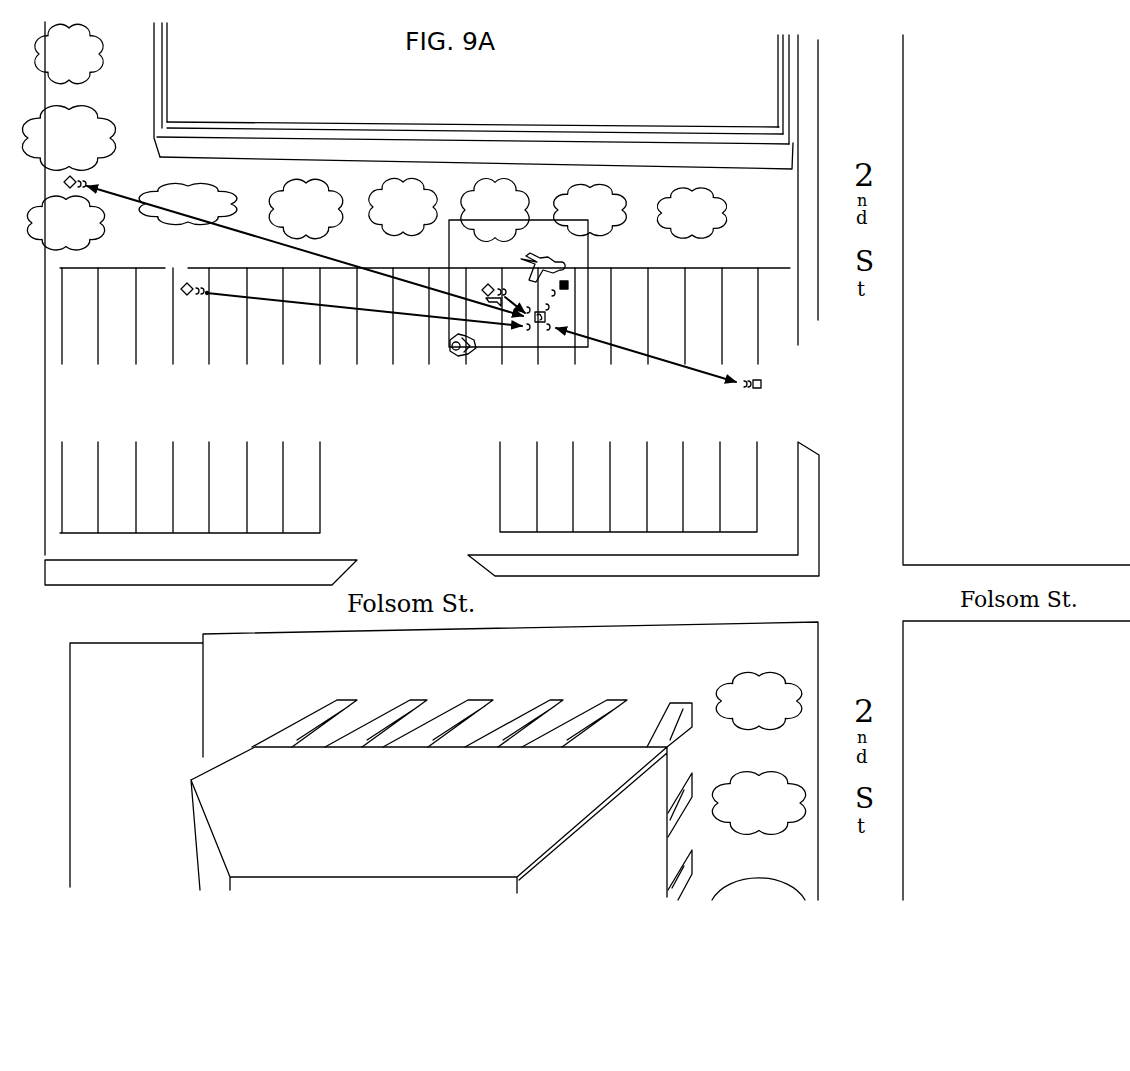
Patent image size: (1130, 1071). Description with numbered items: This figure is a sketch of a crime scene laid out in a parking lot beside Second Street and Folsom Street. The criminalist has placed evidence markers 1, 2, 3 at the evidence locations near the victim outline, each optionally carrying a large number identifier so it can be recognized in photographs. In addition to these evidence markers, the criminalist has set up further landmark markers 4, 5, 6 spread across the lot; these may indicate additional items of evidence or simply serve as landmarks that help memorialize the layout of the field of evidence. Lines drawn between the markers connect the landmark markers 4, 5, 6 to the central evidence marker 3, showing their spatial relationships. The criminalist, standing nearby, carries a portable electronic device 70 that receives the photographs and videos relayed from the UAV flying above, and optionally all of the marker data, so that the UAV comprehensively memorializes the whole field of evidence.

The evidence marker 1 is at (549, 291).
The evidence marker 2 is at (500, 291).
The evidence marker 3 is at (545, 320).
The landmark marker 4 is at (658, 358).
The landmark marker 5 is at (346, 298).
The landmark marker 6 is at (287, 243).
The portable electronic device 70 is at (473, 342).